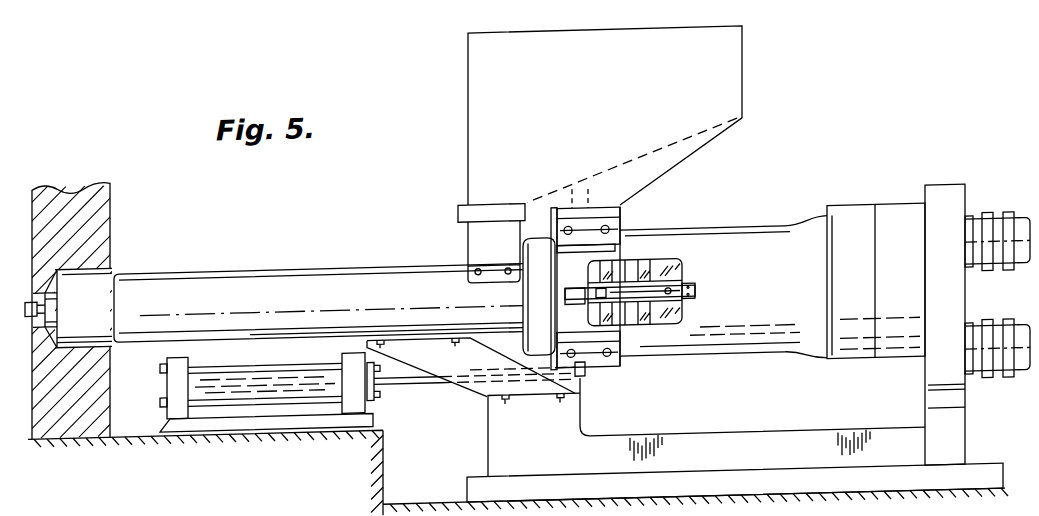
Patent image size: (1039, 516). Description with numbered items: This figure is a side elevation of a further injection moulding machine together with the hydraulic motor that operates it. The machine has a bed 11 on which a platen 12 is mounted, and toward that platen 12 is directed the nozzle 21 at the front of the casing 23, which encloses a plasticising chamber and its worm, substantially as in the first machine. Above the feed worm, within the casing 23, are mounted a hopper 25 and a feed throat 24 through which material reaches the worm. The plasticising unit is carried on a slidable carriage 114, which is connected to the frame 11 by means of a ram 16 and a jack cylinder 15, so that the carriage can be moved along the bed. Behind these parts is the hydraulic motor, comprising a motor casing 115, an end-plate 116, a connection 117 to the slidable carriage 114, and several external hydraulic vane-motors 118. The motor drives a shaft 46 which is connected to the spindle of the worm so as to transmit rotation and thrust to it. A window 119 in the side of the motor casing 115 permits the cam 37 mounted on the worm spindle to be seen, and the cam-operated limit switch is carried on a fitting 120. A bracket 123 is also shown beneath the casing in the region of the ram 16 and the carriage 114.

The bed 11 is at (208, 438).
The platen 12 is at (92, 217).
The jack cylinder 15 is at (353, 401).
The ram 16 is at (408, 388).
The nozzle 21 is at (47, 291).
The casing 23 is at (278, 292).
The feed throat 24 is at (478, 257).
The hopper 25 is at (483, 169).
The cam 37 is at (657, 290).
The motor shaft 46 is at (645, 317).
The slidable carriage 114 is at (500, 455).
The motor casing 115 is at (765, 262).
The end-plate 116 is at (894, 238).
The connection 117 is at (945, 387).
The external hydraulic vane-motors 118 is at (995, 243).
The window 119 is at (677, 280).
The fitting 120 is at (647, 307).
The bracket 123 is at (478, 369).